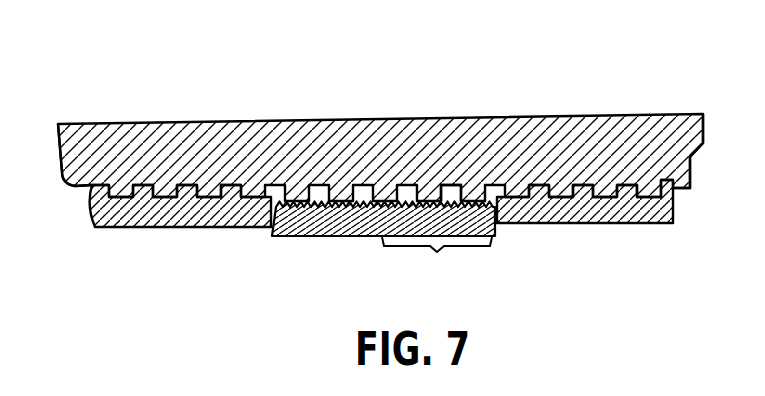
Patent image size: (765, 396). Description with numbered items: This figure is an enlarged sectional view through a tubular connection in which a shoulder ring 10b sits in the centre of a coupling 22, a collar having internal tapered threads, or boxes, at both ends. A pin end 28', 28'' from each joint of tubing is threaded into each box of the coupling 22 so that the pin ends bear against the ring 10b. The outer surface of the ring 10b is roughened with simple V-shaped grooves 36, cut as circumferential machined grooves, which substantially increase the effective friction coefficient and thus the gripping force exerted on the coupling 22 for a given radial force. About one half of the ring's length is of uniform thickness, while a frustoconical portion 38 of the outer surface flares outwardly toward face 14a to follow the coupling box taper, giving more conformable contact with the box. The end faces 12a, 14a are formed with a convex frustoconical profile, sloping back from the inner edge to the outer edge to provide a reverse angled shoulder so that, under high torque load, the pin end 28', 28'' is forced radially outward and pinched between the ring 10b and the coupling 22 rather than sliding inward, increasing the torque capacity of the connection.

The coupling 22 is at (527, 125).
The pin end 28' is at (57, 112).
The pin end 28'' is at (694, 111).
The end face 12a is at (272, 214).
The end face 14a is at (504, 214).
The ring 10b is at (327, 203).
The V-shaped grooves 36 is at (453, 196).
The frustoconical portion 38 is at (437, 265).